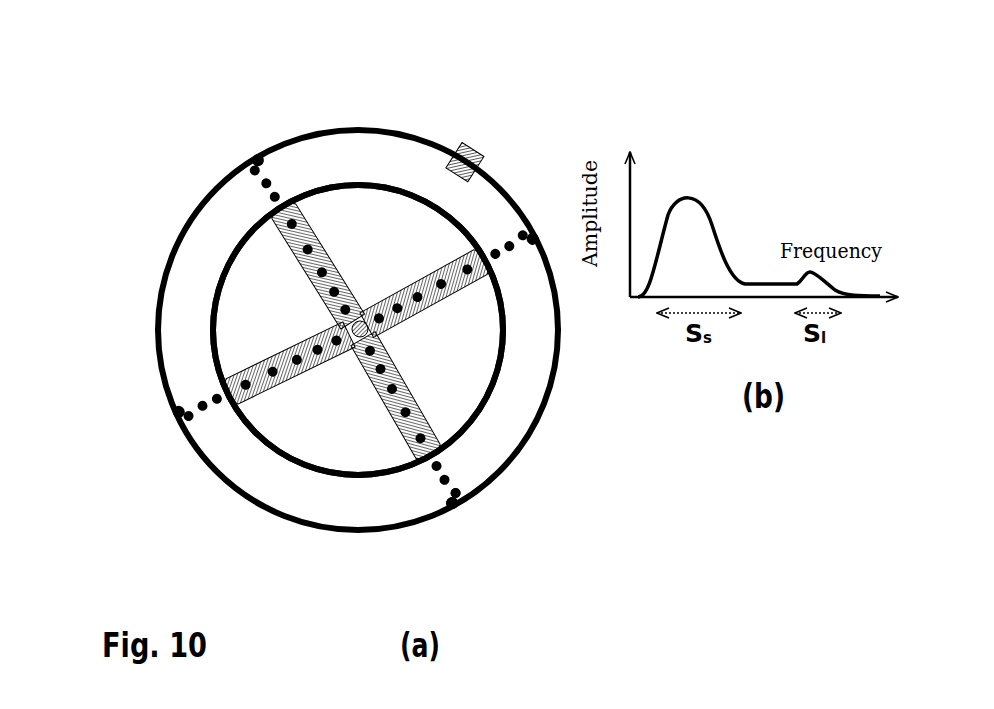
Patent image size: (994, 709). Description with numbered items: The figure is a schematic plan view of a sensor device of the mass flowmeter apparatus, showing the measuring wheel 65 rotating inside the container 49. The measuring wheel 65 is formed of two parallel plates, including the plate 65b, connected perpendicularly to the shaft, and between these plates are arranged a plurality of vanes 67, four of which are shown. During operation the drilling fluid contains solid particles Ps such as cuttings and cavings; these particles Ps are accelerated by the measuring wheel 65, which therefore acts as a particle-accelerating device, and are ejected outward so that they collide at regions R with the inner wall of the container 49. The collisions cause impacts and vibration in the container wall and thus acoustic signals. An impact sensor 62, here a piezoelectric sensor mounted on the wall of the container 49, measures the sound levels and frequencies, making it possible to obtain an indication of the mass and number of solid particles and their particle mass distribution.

The container 49 is at (275, 518).
The measuring wheel 65 is at (243, 234).
The lower plate of the measuring wheel 65b is at (358, 330).
The impact sensor 62 is at (485, 138).
The vanes 67 is at (307, 263).
The solid particles Ps is at (248, 157).
The impact regions R is at (480, 498).